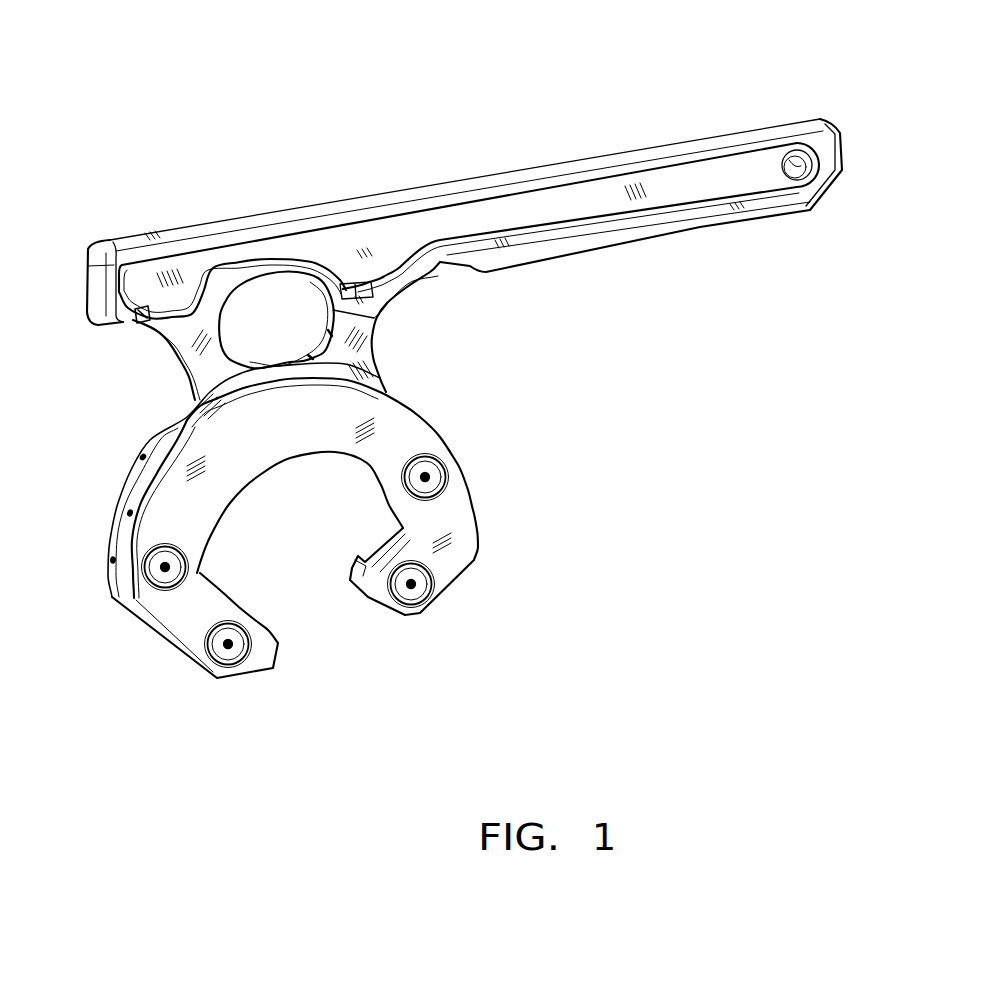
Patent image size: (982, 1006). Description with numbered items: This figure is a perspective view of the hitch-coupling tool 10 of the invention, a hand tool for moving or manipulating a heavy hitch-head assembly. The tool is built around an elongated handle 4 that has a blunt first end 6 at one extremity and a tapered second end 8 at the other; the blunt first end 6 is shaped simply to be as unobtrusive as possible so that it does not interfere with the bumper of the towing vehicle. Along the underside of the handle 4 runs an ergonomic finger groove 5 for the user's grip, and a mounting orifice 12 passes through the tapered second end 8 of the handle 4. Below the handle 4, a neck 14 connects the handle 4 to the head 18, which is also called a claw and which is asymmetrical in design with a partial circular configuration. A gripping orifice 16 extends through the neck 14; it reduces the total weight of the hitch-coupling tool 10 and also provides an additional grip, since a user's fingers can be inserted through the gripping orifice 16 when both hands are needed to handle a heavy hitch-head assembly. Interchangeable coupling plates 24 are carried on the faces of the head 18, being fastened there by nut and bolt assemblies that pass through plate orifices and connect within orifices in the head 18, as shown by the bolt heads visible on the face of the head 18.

The hitch-coupling tool 10 is at (430, 92).
The handle 4 is at (538, 165).
The ergonomic finger groove 5 is at (437, 270).
The blunt first end 6 is at (82, 241).
The tapered second end 8 is at (845, 110).
The mounting orifice 12 is at (800, 152).
The neck 14 is at (132, 330).
The gripping orifice 16 is at (263, 302).
The head 18 is at (410, 393).
The interchangeable coupling plates 24 is at (135, 470).